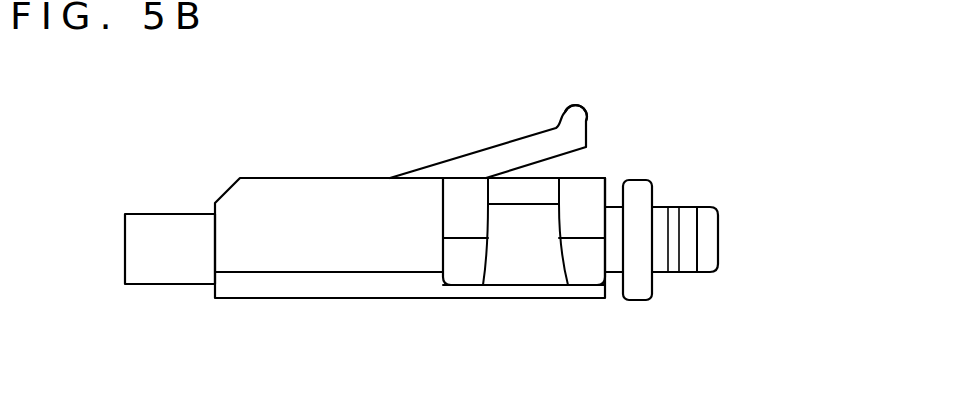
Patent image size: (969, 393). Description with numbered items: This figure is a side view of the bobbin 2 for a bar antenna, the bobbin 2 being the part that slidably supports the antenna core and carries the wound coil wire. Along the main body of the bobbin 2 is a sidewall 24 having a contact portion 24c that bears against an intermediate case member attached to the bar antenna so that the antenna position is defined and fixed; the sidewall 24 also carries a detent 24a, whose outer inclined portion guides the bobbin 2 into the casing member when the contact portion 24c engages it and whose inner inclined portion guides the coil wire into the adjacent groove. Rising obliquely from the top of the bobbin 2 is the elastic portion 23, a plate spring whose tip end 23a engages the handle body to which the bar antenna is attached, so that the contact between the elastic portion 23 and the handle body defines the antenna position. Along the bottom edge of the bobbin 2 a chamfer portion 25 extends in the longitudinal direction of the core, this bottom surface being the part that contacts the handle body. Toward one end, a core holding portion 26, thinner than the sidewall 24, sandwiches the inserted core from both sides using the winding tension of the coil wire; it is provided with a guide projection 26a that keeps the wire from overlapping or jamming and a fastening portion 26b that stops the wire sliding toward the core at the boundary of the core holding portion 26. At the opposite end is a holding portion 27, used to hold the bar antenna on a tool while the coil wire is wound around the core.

The bobbin 2 is at (190, 157).
The elastic portion 23 is at (501, 158).
The tip end 23a is at (579, 108).
The sidewall 24 is at (443, 213).
The detent 24a is at (532, 267).
The contact portion 24c is at (468, 208).
The chamfer portion 25 is at (385, 287).
The core holding portion 26 is at (662, 240).
The guide projection 26a is at (672, 215).
The fastening portion 26b is at (710, 243).
The holding portion 27 is at (143, 256).